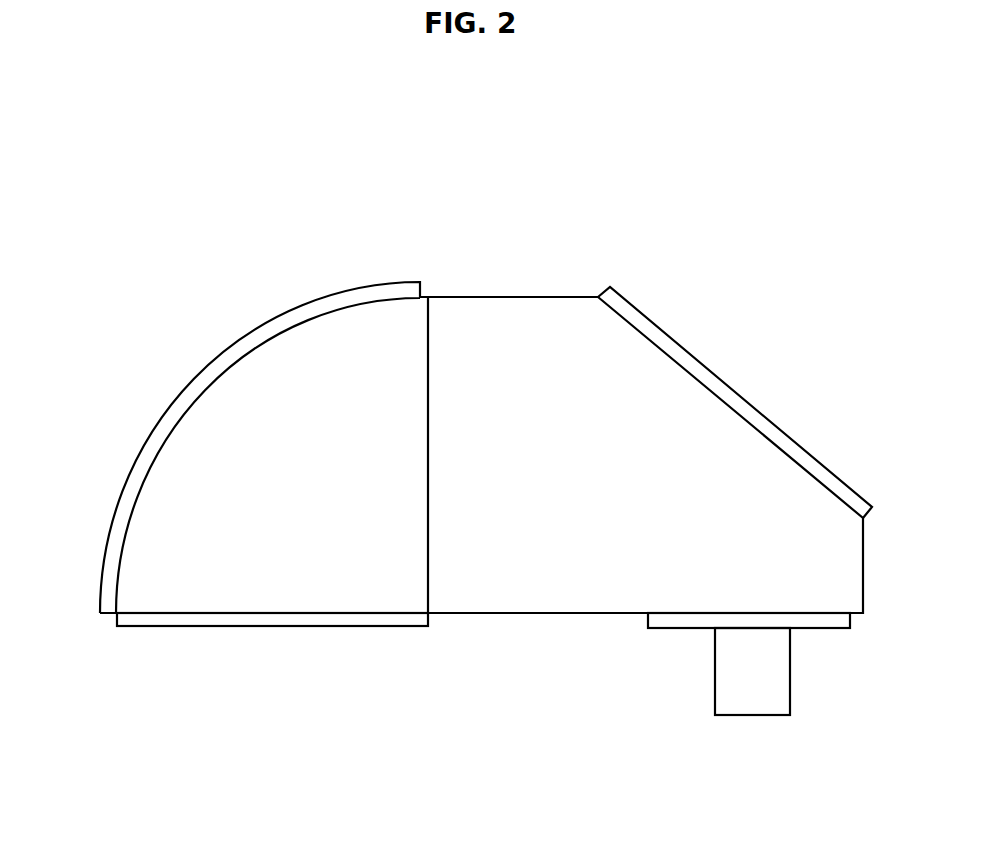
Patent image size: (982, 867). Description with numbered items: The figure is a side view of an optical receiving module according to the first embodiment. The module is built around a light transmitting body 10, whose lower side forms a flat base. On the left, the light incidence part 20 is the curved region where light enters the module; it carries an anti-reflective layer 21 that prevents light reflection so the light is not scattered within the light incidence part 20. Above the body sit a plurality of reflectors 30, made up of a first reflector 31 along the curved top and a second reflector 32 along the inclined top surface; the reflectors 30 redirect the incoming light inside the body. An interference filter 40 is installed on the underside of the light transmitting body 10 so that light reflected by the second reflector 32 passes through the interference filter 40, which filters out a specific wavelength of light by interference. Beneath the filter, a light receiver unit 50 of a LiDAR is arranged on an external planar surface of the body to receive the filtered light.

The light transmitting body 10 is at (547, 540).
The light incidence part 20 is at (240, 613).
The anti-reflective layer 21 is at (270, 625).
The reflectors 30 is at (486, 374).
The first reflector 31 is at (303, 312).
The second reflector 32 is at (647, 315).
The interference filter 40 is at (823, 628).
The light receiver unit 50 is at (762, 717).